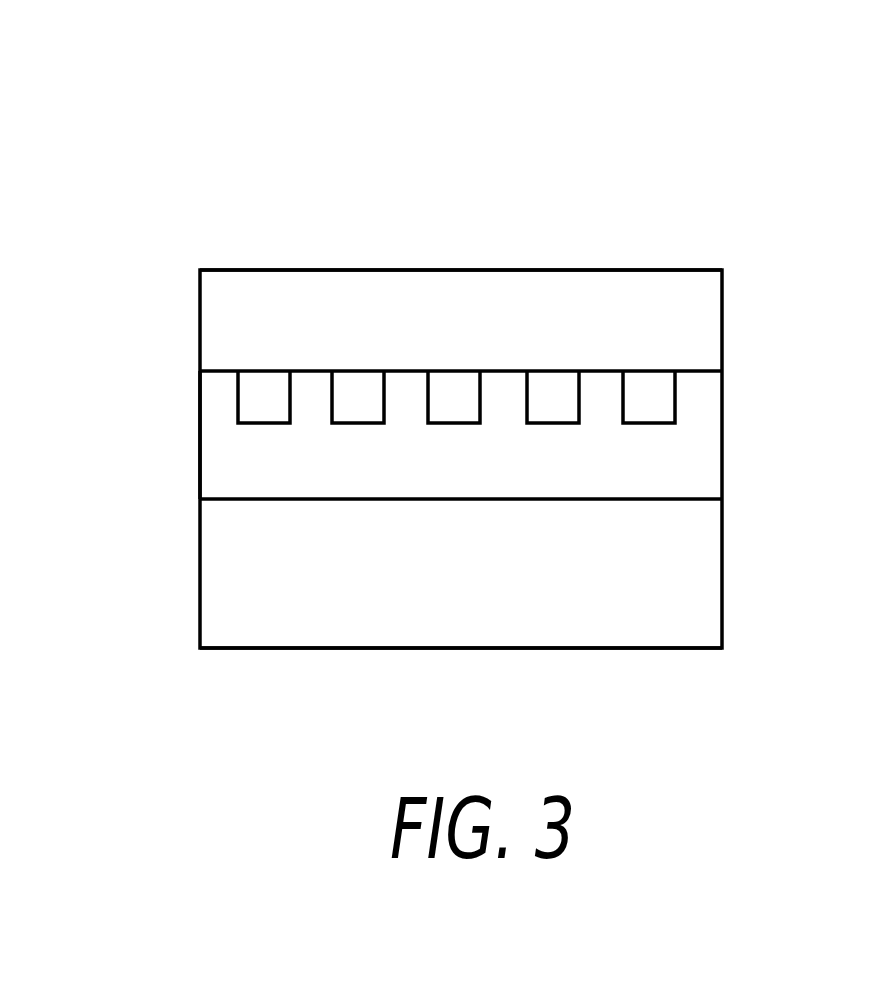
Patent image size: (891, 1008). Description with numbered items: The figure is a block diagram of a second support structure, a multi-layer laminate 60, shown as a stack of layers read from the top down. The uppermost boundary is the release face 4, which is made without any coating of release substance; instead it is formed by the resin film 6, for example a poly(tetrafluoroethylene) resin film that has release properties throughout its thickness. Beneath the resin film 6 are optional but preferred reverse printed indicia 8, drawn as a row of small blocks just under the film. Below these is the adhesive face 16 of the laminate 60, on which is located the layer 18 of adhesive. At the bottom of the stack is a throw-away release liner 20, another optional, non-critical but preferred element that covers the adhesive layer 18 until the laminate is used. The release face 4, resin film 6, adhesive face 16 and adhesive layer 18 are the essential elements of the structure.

The multi-layer laminate 60 is at (160, 221).
The release face 4 is at (575, 272).
The resin film 6 is at (722, 321).
The reverse printed indicia 8 is at (675, 395).
The adhesive face 16 is at (314, 374).
The layer of adhesive 18 is at (722, 475).
The throw-away release liner 20 is at (722, 617).